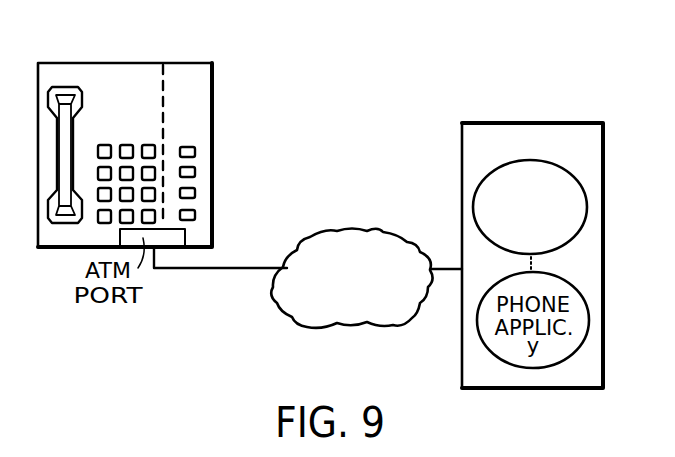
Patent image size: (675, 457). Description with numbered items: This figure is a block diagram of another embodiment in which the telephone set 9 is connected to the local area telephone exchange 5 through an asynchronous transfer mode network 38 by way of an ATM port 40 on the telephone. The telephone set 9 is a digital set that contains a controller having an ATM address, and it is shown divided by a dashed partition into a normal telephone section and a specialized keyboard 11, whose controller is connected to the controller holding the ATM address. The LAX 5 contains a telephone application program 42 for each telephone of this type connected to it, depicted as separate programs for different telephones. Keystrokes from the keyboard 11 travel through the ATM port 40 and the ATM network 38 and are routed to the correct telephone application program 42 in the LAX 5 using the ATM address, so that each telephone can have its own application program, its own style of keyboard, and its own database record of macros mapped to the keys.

The telephone set 9 is at (97, 70).
The keyboard 11 is at (198, 72).
The ATM port 40 is at (178, 237).
The ATM network 38 is at (367, 230).
The local area telephone exchange 5 is at (507, 123).
The telephone application program 42 is at (486, 177).